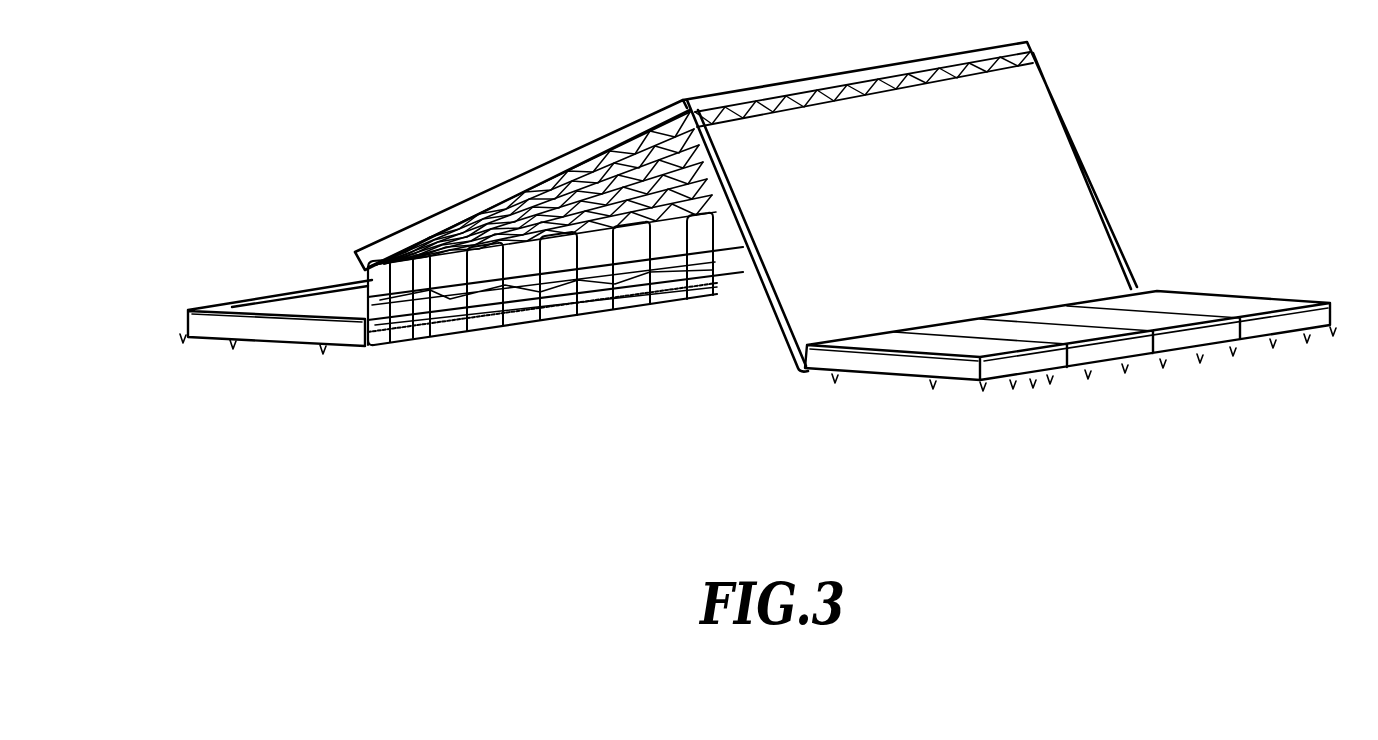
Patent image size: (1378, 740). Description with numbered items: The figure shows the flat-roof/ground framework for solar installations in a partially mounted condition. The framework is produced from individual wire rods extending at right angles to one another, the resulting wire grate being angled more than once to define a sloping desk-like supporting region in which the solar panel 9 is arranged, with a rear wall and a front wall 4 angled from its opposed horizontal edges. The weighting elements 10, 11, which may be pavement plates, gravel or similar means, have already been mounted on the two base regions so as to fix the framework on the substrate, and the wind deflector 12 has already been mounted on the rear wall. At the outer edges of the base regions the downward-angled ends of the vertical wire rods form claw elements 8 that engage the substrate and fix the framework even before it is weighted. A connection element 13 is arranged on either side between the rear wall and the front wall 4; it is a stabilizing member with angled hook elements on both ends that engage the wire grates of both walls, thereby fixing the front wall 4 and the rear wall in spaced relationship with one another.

The front wall 4 is at (363, 278).
The claw elements 8 is at (183, 338).
The solar panel 9 is at (502, 197).
The weighting means 10 is at (288, 327).
The weighting means 11 is at (910, 363).
The wind deflector 12 is at (1022, 168).
The connection element 13 is at (740, 277).